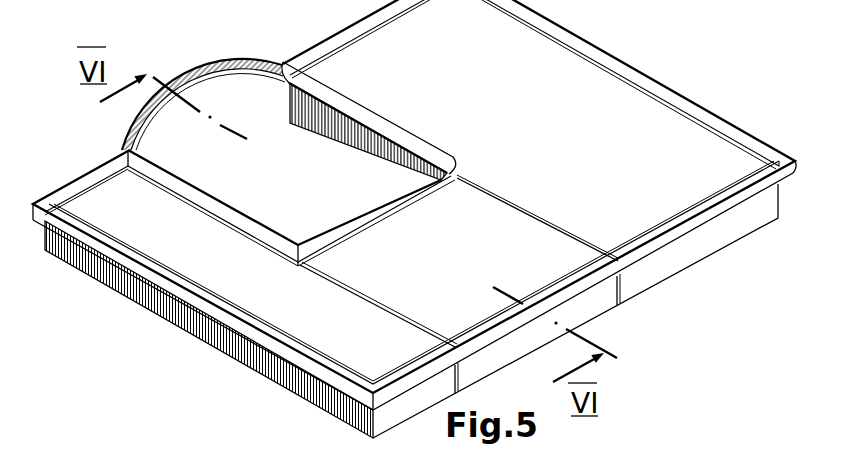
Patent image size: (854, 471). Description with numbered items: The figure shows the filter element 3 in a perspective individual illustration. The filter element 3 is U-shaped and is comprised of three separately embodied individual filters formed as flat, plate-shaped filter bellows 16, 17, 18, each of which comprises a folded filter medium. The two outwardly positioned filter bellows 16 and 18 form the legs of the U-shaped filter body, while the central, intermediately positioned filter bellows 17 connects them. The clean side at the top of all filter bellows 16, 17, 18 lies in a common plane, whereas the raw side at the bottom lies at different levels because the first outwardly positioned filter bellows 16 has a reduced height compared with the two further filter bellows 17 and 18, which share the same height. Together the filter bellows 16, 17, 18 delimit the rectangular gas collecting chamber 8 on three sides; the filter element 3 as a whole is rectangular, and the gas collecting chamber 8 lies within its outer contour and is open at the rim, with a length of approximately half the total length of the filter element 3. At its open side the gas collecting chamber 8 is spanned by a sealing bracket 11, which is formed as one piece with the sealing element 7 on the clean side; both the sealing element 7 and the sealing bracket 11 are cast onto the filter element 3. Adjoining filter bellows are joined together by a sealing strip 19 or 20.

The filter element 3 is at (680, 58).
The sealing element 7 is at (277, 253).
The gas collecting chamber 8 is at (303, 202).
The sealing bracket 11 is at (222, 68).
The first outwardly positioned filter bellows 16 is at (228, 278).
The central filter bellows 17 is at (447, 273).
The second outwardly positioned filter bellows 18 is at (595, 175).
The sealing strip 19 is at (359, 302).
The sealing strip 20 is at (517, 211).